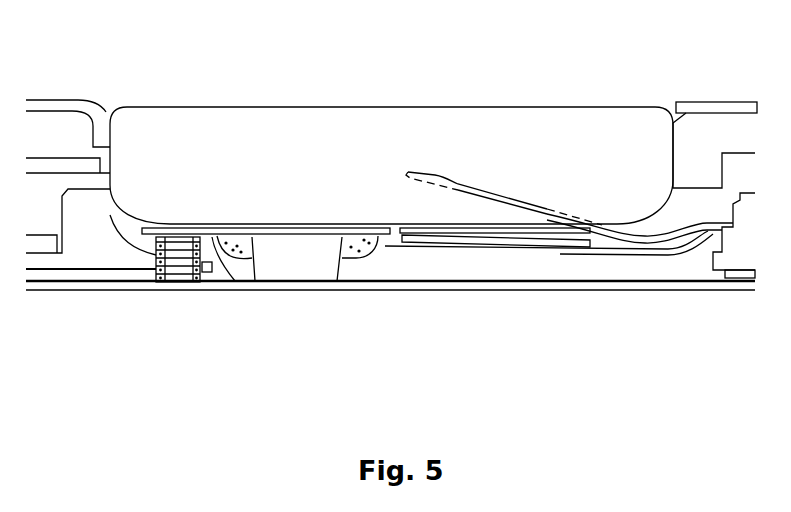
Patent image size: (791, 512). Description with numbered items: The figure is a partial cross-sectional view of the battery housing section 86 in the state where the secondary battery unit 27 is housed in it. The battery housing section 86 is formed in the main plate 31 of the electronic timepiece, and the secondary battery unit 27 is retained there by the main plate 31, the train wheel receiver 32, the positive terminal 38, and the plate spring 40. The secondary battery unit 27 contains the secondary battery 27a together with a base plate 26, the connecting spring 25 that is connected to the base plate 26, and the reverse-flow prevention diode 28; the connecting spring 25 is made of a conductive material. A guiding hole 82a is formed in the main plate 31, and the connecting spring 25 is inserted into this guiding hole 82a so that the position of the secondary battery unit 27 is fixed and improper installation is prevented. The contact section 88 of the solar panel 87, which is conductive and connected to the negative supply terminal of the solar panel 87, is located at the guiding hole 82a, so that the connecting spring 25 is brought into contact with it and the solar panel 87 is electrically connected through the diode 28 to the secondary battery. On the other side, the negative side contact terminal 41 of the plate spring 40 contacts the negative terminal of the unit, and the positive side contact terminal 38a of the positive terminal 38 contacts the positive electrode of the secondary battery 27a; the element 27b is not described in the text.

The connecting spring 25 is at (177, 284).
The base plate 26 is at (213, 234).
The secondary battery unit 27 is at (455, 92).
The secondary battery 27a is at (360, 123).
The holder bottom plate 27b is at (450, 237).
The reverse-flow prevention diode 28 is at (297, 263).
The main plate 31 is at (90, 255).
The train wheel receiver 32 is at (693, 123).
The positive terminal 38 is at (68, 130).
The positive side contact terminal 38a is at (102, 125).
The plate spring 40 is at (582, 246).
The negative side contact terminal 41 is at (428, 234).
The guiding hole 82a is at (206, 282).
The battery housing section 86 is at (125, 218).
The solar panel 87 is at (523, 286).
The contact section 88 is at (142, 285).